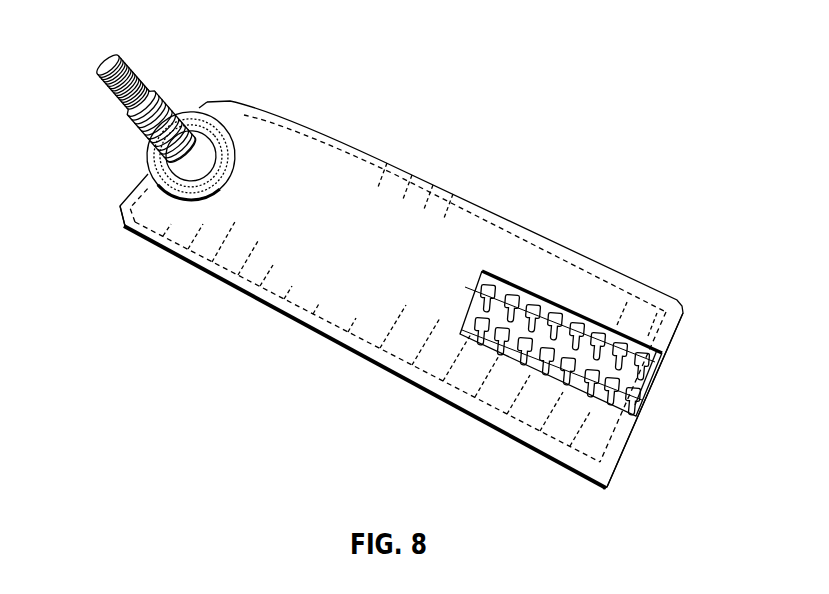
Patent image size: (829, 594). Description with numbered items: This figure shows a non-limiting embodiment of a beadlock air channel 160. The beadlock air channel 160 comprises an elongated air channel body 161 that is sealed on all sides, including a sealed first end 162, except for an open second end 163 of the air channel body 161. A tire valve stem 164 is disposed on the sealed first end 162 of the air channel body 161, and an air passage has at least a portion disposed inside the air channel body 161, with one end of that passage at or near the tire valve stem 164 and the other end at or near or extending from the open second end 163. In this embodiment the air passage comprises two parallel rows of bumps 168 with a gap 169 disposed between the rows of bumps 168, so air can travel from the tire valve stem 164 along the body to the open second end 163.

The beadlock air channel 160 is at (382, 259).
The air channel body 161 is at (432, 220).
The sealed first end 162 is at (132, 190).
The open second end 163 is at (633, 437).
The tire valve stem 164 is at (152, 90).
The rows of bumps 168 is at (655, 380).
The gap 169 is at (558, 352).